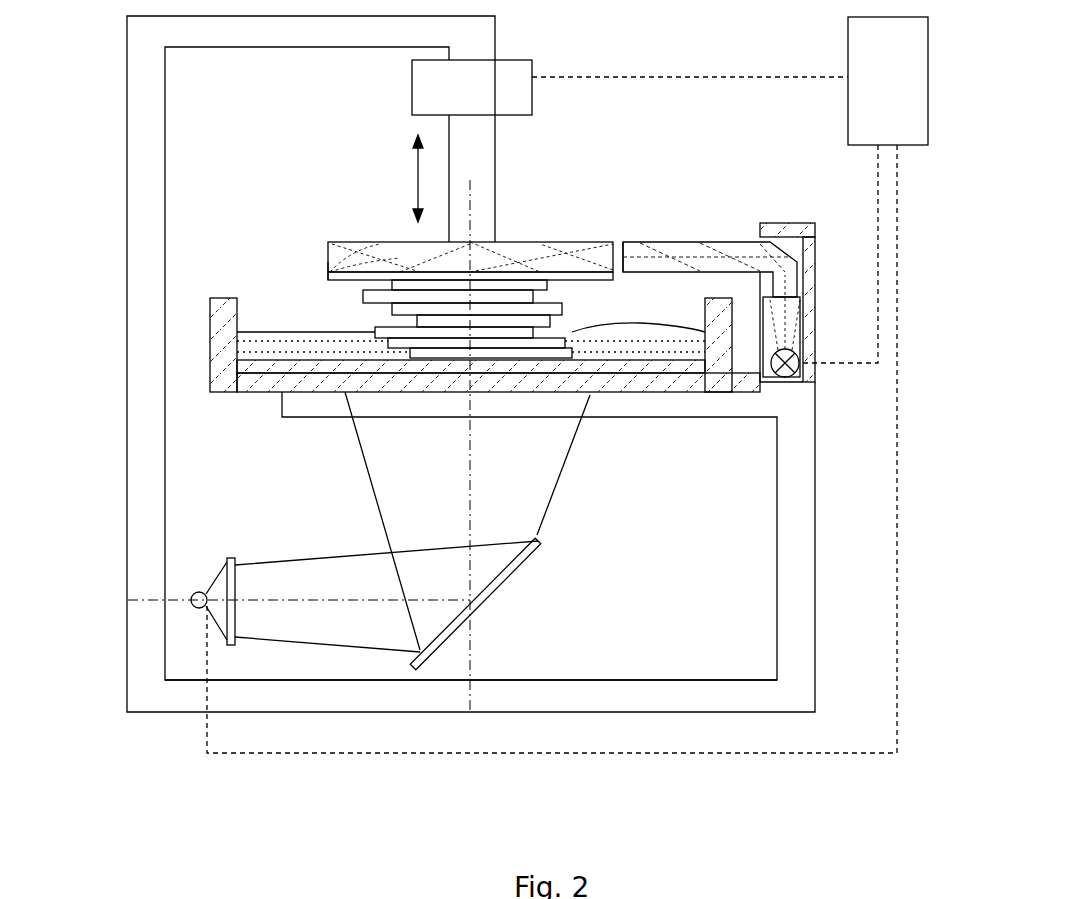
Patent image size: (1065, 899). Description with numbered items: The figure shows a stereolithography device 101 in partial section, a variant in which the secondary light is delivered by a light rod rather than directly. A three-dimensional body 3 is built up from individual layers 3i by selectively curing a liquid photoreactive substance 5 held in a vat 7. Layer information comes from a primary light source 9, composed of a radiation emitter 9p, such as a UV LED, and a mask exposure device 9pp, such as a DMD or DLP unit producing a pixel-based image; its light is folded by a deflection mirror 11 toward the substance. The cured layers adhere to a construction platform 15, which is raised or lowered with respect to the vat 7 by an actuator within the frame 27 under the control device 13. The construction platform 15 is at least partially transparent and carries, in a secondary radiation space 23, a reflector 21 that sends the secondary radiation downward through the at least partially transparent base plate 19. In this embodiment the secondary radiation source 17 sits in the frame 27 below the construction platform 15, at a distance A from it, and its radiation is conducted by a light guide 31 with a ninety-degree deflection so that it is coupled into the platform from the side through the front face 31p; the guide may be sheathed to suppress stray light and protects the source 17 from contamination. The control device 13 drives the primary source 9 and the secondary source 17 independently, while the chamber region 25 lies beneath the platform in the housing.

The stereolithography device 101 is at (120, 2).
The frame 27 is at (855, 447).
The control device 13 is at (567, 385).
The construction platform 15 is at (373, 228).
The reflector 21 is at (326, 238).
The secondary radiation space 23 is at (558, 259).
The base plate 19 is at (328, 270).
The three-dimensional body 3 is at (352, 296).
The layer 3i is at (570, 353).
The vat 7 is at (214, 288).
The photoreactive substance 5 is at (628, 333).
The distance A is at (573, 207).
The light guide 31 is at (745, 232).
The front face 31p is at (645, 232).
The secondary radiation source 17 is at (779, 376).
The primary light source 9 is at (185, 495).
The radiation emitter 9p is at (197, 590).
The mask exposure device 9pp is at (233, 557).
The deflection mirror 11 is at (513, 573).
The lower chamber 25 is at (471, 658).